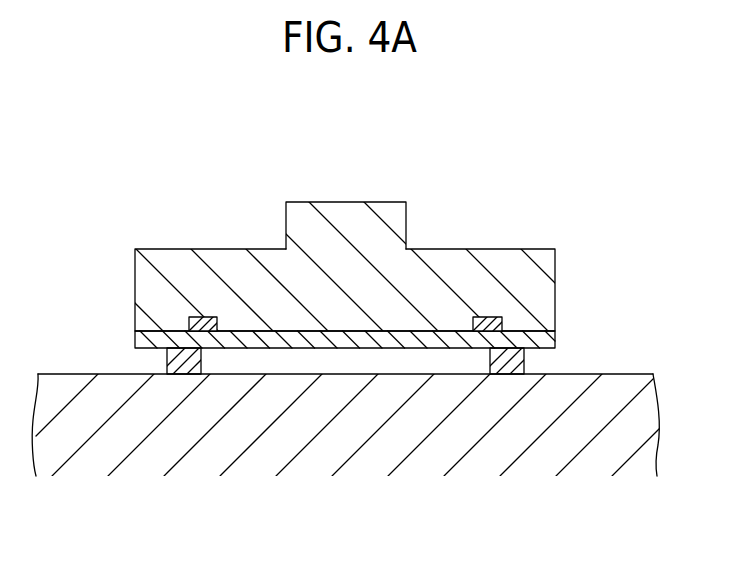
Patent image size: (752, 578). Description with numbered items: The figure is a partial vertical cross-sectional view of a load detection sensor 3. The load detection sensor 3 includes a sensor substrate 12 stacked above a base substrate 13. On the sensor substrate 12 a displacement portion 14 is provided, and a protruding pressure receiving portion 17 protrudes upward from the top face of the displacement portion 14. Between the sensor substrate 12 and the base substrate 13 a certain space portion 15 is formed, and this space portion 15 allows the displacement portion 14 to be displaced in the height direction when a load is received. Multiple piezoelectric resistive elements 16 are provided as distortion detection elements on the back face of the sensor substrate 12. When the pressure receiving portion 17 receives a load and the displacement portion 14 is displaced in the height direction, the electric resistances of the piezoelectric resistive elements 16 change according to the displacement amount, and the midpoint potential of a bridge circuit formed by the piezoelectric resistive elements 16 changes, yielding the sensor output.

The load detection sensor 3 is at (447, 138).
The sensor substrate 12 is at (563, 331).
The base substrate 13 is at (588, 402).
The displacement portion 14 is at (352, 280).
The space portion 15 is at (356, 386).
The piezoelectric resistive elements 16 is at (197, 316).
The pressure receiving portion 17 is at (348, 220).